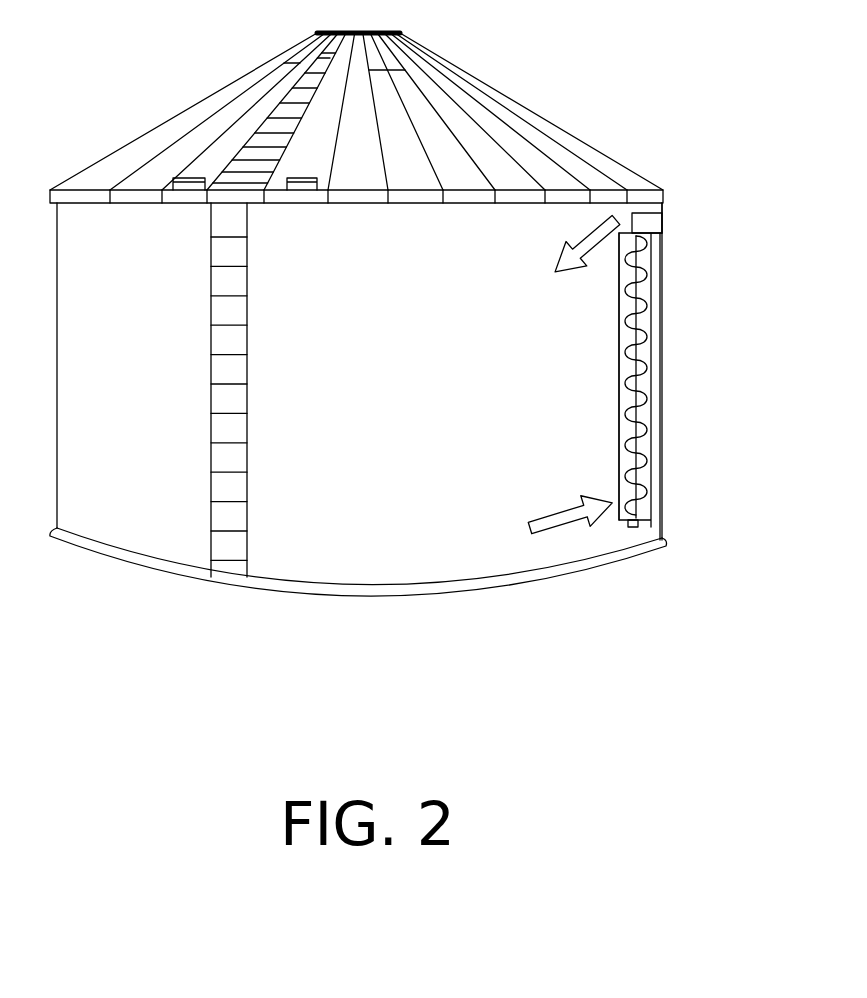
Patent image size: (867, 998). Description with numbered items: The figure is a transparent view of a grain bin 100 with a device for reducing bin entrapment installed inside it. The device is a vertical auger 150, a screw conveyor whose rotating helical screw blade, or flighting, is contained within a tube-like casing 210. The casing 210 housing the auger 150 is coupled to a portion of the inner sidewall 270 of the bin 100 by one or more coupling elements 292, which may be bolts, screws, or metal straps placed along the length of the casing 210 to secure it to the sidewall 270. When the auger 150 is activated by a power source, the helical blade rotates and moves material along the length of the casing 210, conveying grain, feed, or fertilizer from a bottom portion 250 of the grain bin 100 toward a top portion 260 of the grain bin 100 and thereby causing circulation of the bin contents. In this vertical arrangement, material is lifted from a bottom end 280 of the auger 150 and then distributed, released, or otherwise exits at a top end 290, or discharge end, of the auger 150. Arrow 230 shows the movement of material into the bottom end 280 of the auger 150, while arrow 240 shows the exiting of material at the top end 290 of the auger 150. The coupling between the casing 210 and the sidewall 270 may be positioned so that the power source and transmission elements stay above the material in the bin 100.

The grain bin 100 is at (135, 261).
The auger 150 is at (647, 275).
The casing 210 is at (660, 372).
The arrow 230 is at (547, 517).
The arrow 240 is at (553, 258).
The bottom portion 250 is at (363, 583).
The top portion 260 is at (410, 282).
The inner sidewall 270 is at (652, 222).
The bottom end 280 is at (640, 523).
The top end 290 is at (620, 250).
The coupling elements 292 is at (663, 217).